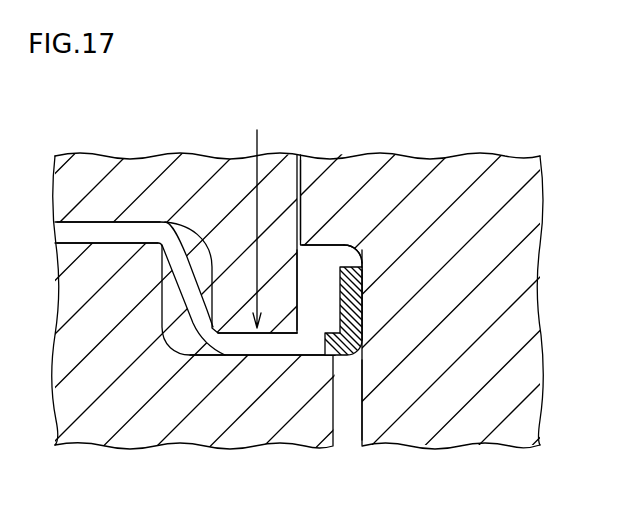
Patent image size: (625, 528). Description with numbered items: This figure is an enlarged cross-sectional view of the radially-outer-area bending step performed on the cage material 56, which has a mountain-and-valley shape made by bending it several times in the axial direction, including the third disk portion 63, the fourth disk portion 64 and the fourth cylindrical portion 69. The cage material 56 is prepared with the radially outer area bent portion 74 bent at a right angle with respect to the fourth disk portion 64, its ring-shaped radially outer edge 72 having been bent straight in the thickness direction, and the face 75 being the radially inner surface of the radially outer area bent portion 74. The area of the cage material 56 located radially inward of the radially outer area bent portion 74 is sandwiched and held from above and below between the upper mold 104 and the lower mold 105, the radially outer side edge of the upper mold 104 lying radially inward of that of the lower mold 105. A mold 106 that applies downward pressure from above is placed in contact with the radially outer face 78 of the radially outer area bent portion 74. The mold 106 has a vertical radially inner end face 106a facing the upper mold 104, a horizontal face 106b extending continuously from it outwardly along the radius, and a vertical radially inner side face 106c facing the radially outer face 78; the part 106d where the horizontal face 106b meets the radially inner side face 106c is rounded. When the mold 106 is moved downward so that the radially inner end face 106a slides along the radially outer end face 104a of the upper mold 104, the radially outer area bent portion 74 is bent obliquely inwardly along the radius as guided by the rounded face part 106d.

The third disk portion 63 is at (100, 235).
The upper mold 104 is at (147, 172).
The fourth cylindrical portion 69 is at (205, 245).
The cage material 56 is at (255, 219).
The radially outer end face of the mold 104a is at (298, 185).
The radially inner end face 106a is at (302, 187).
The horizontal face 106b is at (325, 243).
The edge 72 is at (352, 243).
The rounded face part 106d is at (363, 282).
The radially outer area bent portion 74 is at (366, 306).
The lower mold 105 is at (192, 418).
The fourth disk portion 64 is at (250, 340).
The face 75 is at (335, 298).
The radially inner side face 106c is at (362, 413).
The radially outer face 78 is at (368, 306).
The mold 106 is at (465, 420).